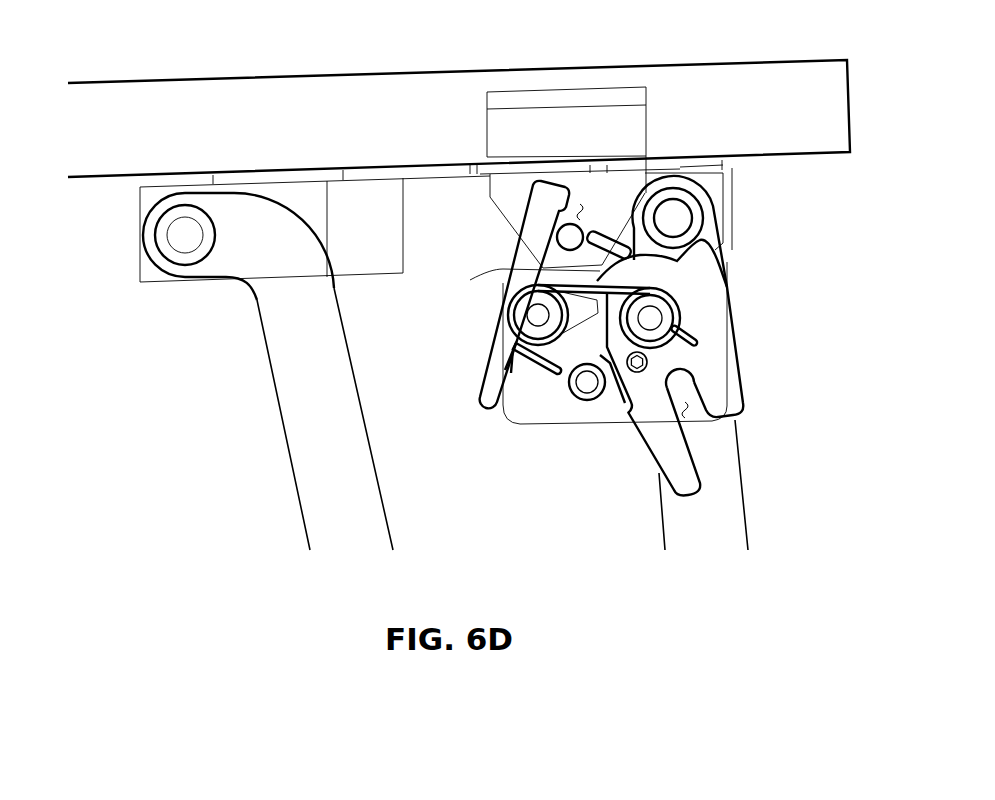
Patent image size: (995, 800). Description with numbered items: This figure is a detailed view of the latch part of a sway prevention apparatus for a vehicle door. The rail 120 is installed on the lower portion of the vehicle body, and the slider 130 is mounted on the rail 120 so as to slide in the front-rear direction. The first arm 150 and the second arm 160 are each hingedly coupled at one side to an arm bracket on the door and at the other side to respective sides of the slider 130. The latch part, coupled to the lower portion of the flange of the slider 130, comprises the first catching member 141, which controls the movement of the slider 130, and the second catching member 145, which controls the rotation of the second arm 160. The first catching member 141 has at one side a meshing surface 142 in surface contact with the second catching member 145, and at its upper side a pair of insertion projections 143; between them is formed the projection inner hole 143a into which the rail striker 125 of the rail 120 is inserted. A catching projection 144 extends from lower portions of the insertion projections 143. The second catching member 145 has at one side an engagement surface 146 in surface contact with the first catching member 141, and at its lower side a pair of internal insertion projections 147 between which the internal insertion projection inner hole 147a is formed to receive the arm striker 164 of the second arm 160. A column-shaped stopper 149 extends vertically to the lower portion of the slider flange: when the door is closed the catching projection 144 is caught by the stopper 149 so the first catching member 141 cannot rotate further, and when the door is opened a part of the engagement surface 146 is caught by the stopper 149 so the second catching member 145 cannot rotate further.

The rail 120 is at (157, 112).
The rail striker 125 is at (487, 270).
The slider 130 is at (142, 266).
The first catching member 141 is at (504, 258).
The meshing surface 142 is at (585, 287).
The insertion projections 143 is at (608, 241).
The projection inner hole 143a is at (570, 247).
The catching projection 144 is at (483, 377).
The second catching member 145 is at (730, 302).
The engagement surface 146 is at (585, 287).
The internal insertion projections 147 is at (686, 481).
The internal insertion projection inner hole 147a is at (700, 412).
The stopper 149 is at (577, 385).
The first arm 150 is at (300, 443).
The second arm 160 is at (668, 519).
The arm striker 164 is at (665, 414).